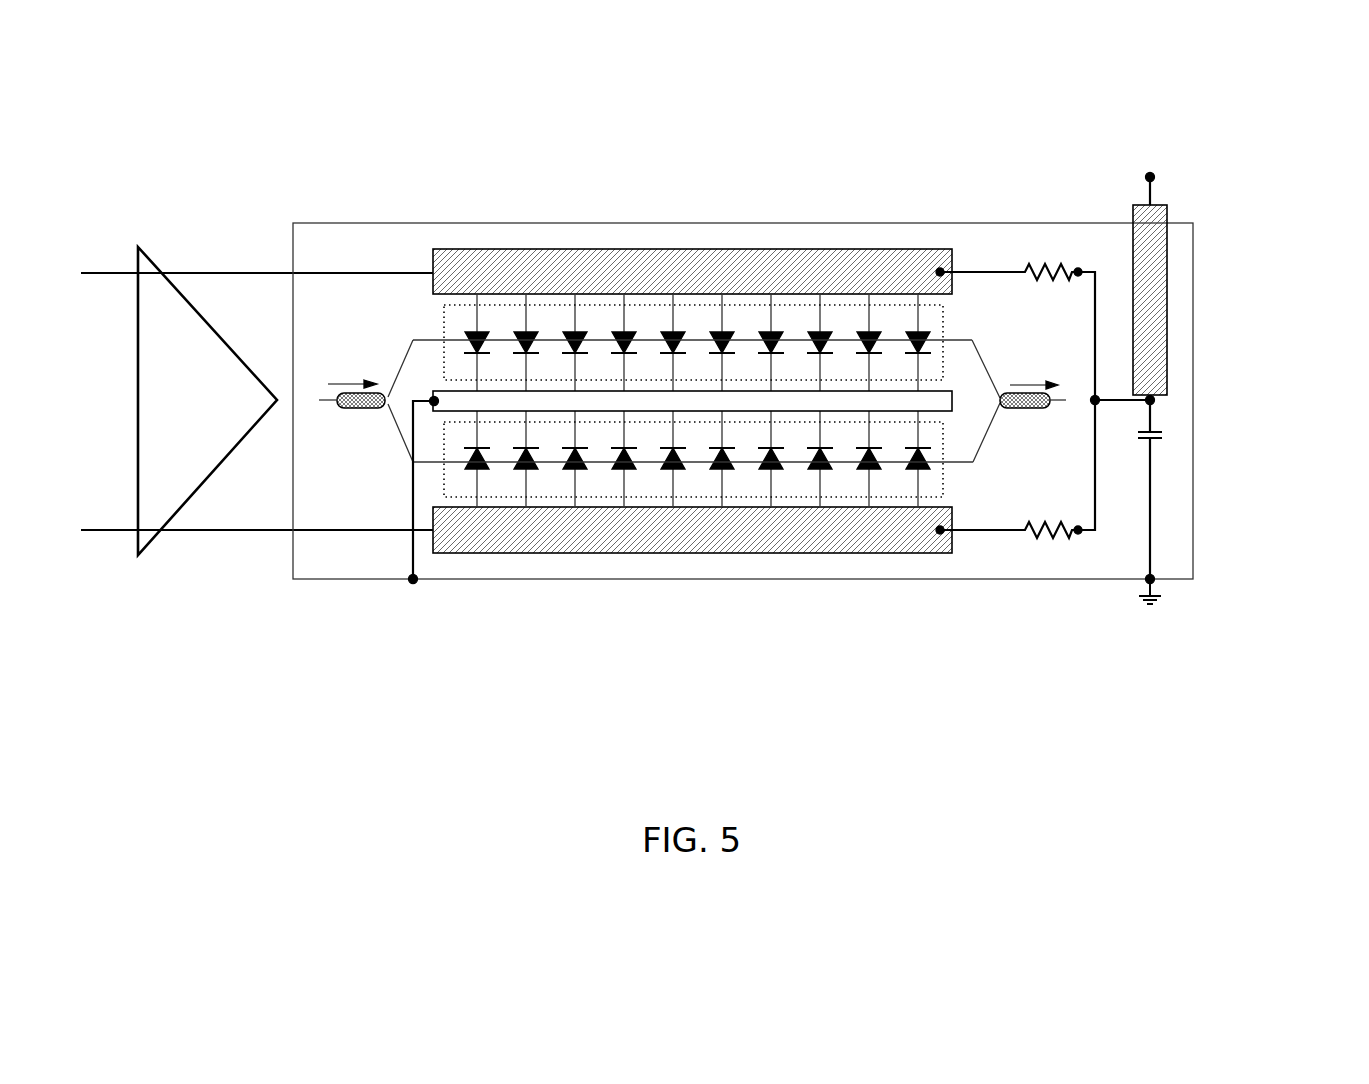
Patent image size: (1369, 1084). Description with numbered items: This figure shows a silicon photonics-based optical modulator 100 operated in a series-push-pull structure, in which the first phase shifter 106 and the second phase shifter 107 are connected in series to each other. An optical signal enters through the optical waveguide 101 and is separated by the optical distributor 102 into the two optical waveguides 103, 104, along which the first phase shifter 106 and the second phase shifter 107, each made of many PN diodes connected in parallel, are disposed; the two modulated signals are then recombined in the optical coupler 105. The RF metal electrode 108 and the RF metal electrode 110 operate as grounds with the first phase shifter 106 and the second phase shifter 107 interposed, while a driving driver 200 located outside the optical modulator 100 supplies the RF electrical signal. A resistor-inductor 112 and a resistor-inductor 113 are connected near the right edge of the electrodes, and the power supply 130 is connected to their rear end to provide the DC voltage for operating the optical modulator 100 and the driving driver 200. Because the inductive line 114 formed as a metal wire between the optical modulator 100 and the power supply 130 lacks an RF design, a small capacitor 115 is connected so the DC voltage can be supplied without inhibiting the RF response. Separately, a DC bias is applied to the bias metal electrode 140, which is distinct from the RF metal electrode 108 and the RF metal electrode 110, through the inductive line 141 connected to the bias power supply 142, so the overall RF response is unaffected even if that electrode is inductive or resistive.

The optical modulator 100 is at (743, 223).
The optical waveguide 101 is at (325, 400).
The optical distributor 102 is at (360, 410).
The optical waveguide 103 is at (407, 353).
The optical waveguide 104 is at (408, 453).
The optical coupler 105 is at (1023, 412).
The first phase shifter 106 is at (943, 318).
The second phase shifter 107 is at (943, 483).
The RF metal electrode 108 is at (952, 252).
The RF metal electrode 110 is at (953, 512).
The resistor-inductor (RL) 112 is at (1050, 262).
The resistor-inductor (RL) 113 is at (1050, 533).
The inductive line 114 is at (1168, 298).
The small capacitor 115 is at (1160, 430).
The power supply 130 is at (1158, 175).
The bias metal electrode 140 is at (948, 390).
The inductive line 141 is at (413, 550).
The bias power supply 142 is at (410, 583).
The driving driver 200 is at (153, 257).